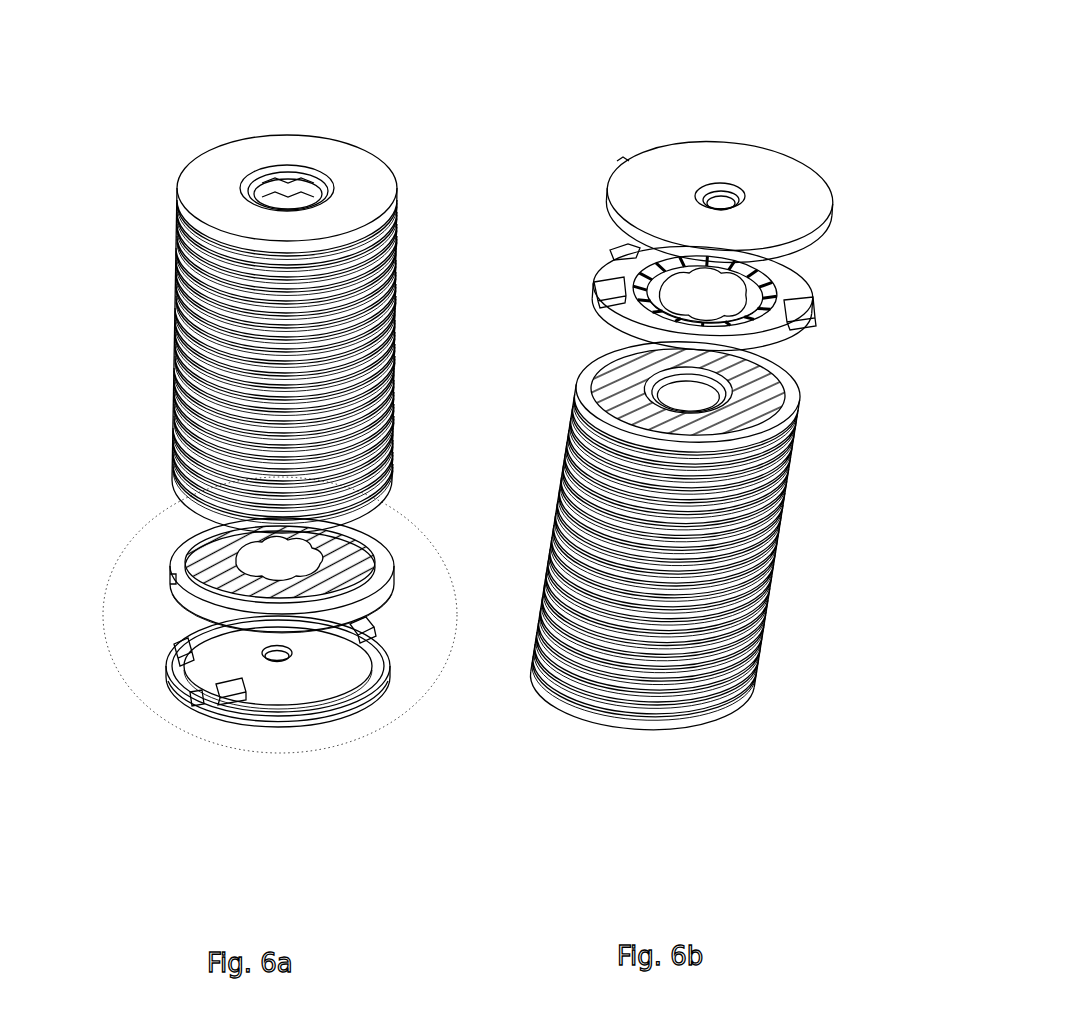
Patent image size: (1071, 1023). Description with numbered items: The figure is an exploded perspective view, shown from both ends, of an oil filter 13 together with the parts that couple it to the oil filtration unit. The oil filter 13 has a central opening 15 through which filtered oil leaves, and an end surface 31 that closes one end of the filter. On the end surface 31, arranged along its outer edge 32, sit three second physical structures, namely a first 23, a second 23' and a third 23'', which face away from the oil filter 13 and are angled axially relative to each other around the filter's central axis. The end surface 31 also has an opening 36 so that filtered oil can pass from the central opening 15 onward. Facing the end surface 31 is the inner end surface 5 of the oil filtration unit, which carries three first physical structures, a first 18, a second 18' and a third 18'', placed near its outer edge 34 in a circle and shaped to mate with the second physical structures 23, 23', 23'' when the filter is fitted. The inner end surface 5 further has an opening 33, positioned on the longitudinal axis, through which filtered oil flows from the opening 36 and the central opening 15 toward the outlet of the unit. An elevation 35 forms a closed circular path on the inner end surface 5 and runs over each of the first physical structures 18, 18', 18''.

In FIG. 6A, the inner end surface 5 is at (267, 680).
In FIG. 6A, the oil filter 13 is at (172, 363).
In FIG. 6B, the oil filter 13 is at (783, 503).
In FIG. 6A, the central opening 15 is at (285, 183).
In FIG. 6A, the first physical structure 18 is at (422, 594).
In FIG. 6A, the second first physical structure 18' is at (174, 739).
In FIG. 6A, the third first physical structure 18'' is at (123, 690).
In FIG. 6B, the first second physical structure 23 is at (867, 297).
In FIG. 6A, the second second physical structure 23' is at (121, 672).
In FIG. 6B, the second second physical structure 23' is at (581, 213).
In FIG. 6A, the third second physical structure 23'' is at (103, 550).
In FIG. 6B, the third second physical structure 23'' is at (538, 310).
In FIG. 6A, the end surface 31 is at (172, 576).
In FIG. 6B, the end surface 31 is at (783, 342).
In FIG. 6A, the outer edge 32 is at (175, 593).
In FIG. 6B, the outer edge 32 is at (807, 277).
In FIG. 6A, the opening 33 is at (280, 657).
In FIG. 6B, the opening 33 is at (718, 183).
In FIG. 6A, the outer edge 34 is at (290, 713).
In FIG. 6B, the outer edge 34 is at (792, 255).
In FIG. 6A, the elevation 35 is at (370, 680).
In FIG. 6A, the opening 36 is at (280, 568).
In FIG. 6B, the opening 36 is at (688, 300).